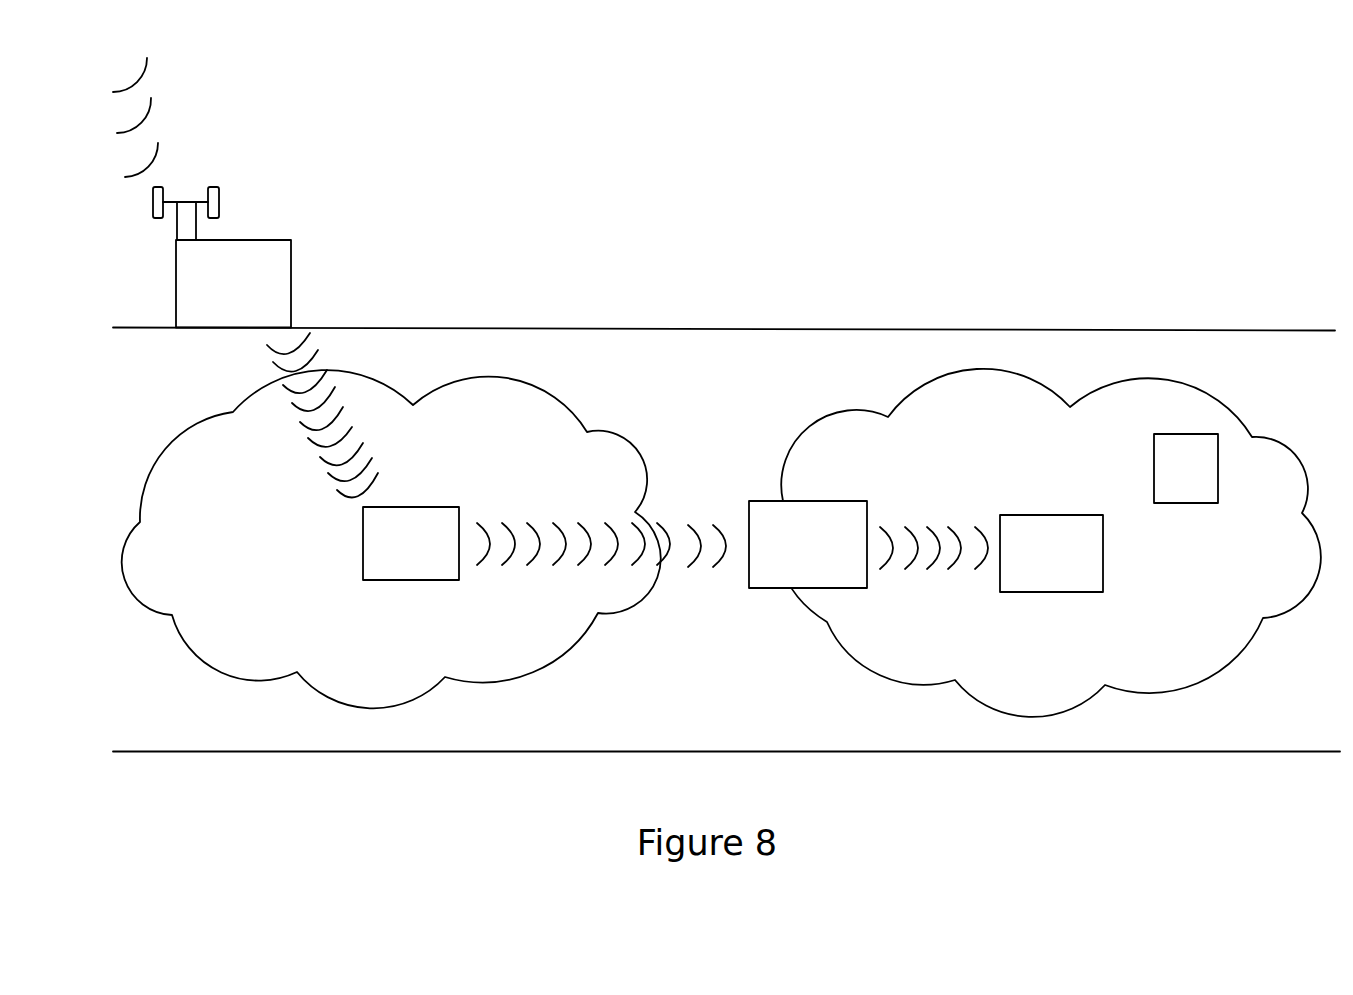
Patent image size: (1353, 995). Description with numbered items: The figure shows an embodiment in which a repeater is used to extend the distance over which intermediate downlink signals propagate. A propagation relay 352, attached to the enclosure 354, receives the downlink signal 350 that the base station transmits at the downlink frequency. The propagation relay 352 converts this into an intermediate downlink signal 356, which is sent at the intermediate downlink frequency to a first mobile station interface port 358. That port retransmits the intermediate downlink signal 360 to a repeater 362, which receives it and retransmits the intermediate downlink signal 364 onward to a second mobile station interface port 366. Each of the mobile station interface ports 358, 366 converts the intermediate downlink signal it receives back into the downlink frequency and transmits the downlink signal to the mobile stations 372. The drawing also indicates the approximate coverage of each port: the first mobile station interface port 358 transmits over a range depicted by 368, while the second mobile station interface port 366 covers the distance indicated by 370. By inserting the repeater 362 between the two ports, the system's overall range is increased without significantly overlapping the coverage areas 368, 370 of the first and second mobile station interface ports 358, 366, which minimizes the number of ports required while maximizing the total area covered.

The downlink signal 350 is at (150, 118).
The propagation relay 352 is at (250, 306).
The enclosure 354 is at (207, 752).
The intermediate downlink signal 356 is at (312, 440).
The mobile station interface port 358 is at (428, 566).
The intermediate downlink signal 360 is at (560, 530).
The repeater 362 is at (827, 570).
The intermediate downlink signal 364 is at (931, 528).
The second mobile station interface port 366 is at (1070, 578).
The range of the first mobile station interface port 368 is at (578, 420).
The range of the second mobile station interface port 370 is at (858, 417).
The mobile station 372 is at (1205, 494).